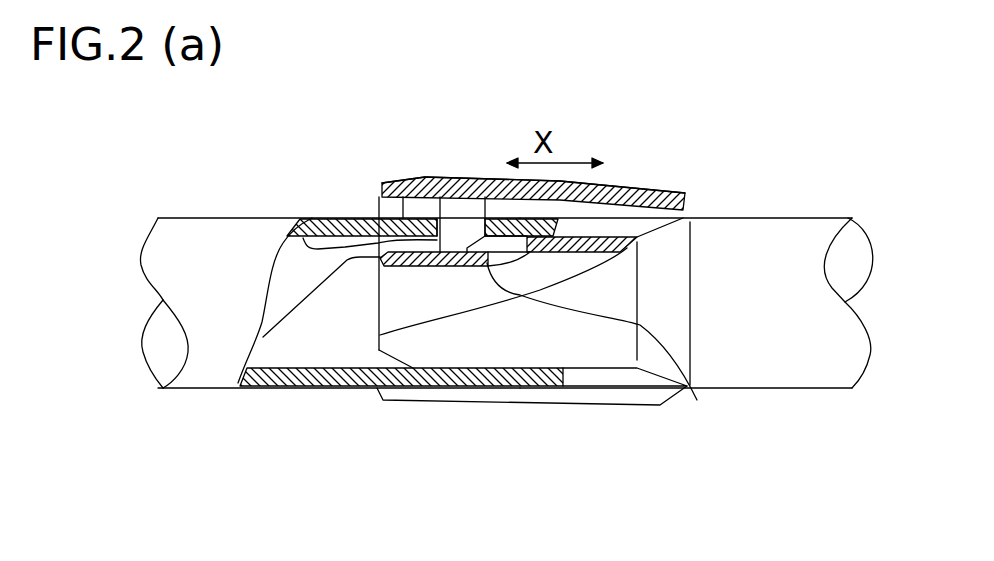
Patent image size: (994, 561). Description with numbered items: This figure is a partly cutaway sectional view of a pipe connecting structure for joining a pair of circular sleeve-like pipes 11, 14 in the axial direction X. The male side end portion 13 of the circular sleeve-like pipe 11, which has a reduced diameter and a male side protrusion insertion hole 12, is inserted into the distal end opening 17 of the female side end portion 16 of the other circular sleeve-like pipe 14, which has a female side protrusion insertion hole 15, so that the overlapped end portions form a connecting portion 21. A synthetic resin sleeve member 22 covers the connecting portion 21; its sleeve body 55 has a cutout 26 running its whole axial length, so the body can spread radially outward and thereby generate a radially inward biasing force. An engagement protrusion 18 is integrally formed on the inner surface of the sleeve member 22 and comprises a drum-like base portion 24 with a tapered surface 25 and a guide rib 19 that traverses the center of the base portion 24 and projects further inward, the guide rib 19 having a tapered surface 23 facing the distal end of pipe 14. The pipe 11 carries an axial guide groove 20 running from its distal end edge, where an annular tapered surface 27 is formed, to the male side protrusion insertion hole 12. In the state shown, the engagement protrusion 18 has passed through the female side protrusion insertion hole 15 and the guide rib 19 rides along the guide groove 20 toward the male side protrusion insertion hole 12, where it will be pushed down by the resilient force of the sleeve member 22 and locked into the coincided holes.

The circular sleeve-like pipe 11 is at (785, 247).
The male side protrusion insertion hole 12 is at (697, 400).
The male side end portion 13 is at (423, 343).
The circular sleeve-like pipe 14 is at (217, 250).
The female side protrusion insertion hole 15 is at (536, 215).
The female side end portion 16 is at (518, 388).
The distal end opening 17 is at (582, 348).
The engagement protrusion 18 is at (457, 205).
The guide rib 19 is at (457, 265).
The guide groove 20 is at (397, 178).
The connecting portion 21 is at (454, 375).
The sleeve member 22 is at (630, 182).
The tapered surface 23 is at (507, 252).
The base portion 24 is at (450, 200).
The tapered surface 25 is at (475, 195).
The cutout 26 is at (633, 400).
The annular tapered surface 27 is at (300, 222).
The sleeve body 55 is at (608, 183).